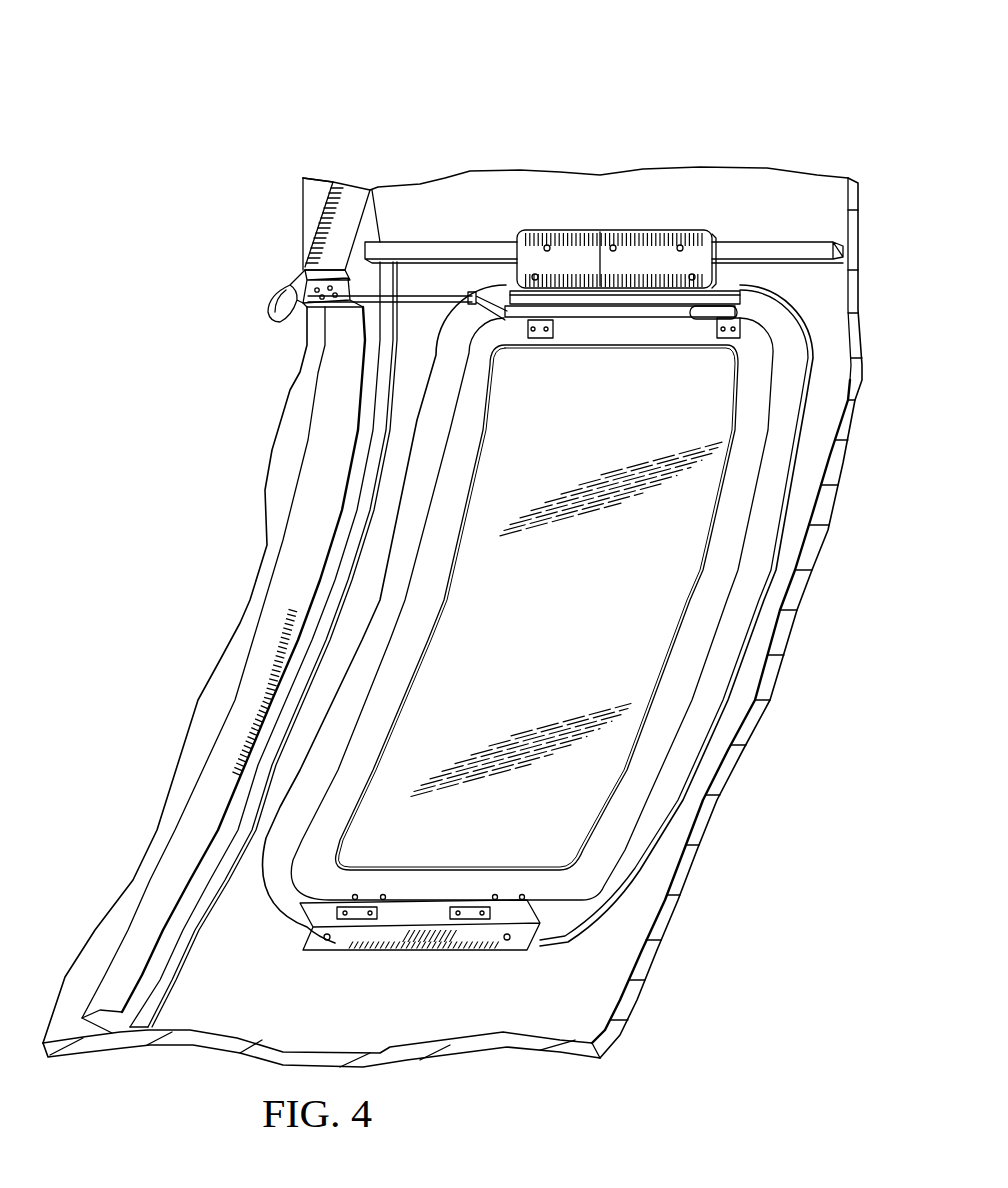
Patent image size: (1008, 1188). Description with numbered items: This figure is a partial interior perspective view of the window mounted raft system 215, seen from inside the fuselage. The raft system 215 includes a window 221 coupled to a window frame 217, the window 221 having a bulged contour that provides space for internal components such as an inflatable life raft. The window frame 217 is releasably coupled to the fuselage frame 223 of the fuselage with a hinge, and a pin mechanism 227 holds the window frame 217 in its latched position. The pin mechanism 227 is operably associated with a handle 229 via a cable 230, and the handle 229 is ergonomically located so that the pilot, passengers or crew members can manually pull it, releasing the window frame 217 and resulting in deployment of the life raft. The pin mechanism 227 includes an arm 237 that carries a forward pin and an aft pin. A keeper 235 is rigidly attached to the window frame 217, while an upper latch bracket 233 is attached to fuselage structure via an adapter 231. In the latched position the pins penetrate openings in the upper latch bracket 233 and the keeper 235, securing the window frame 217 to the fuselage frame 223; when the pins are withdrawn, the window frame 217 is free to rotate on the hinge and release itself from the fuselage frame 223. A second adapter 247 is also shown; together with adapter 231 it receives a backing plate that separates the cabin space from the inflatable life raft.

The raft system 215 is at (380, 150).
The window frame 217 is at (753, 510).
The window 221 is at (677, 587).
The fuselage frame 223 is at (697, 732).
The pin mechanism 227 is at (498, 281).
The handle 229 is at (268, 297).
The cable 230 is at (447, 297).
The adapter 231 is at (680, 230).
The upper latch bracket 233 is at (727, 293).
The keeper 235 is at (730, 347).
The arm 237 is at (597, 320).
The adapter 247 is at (417, 950).